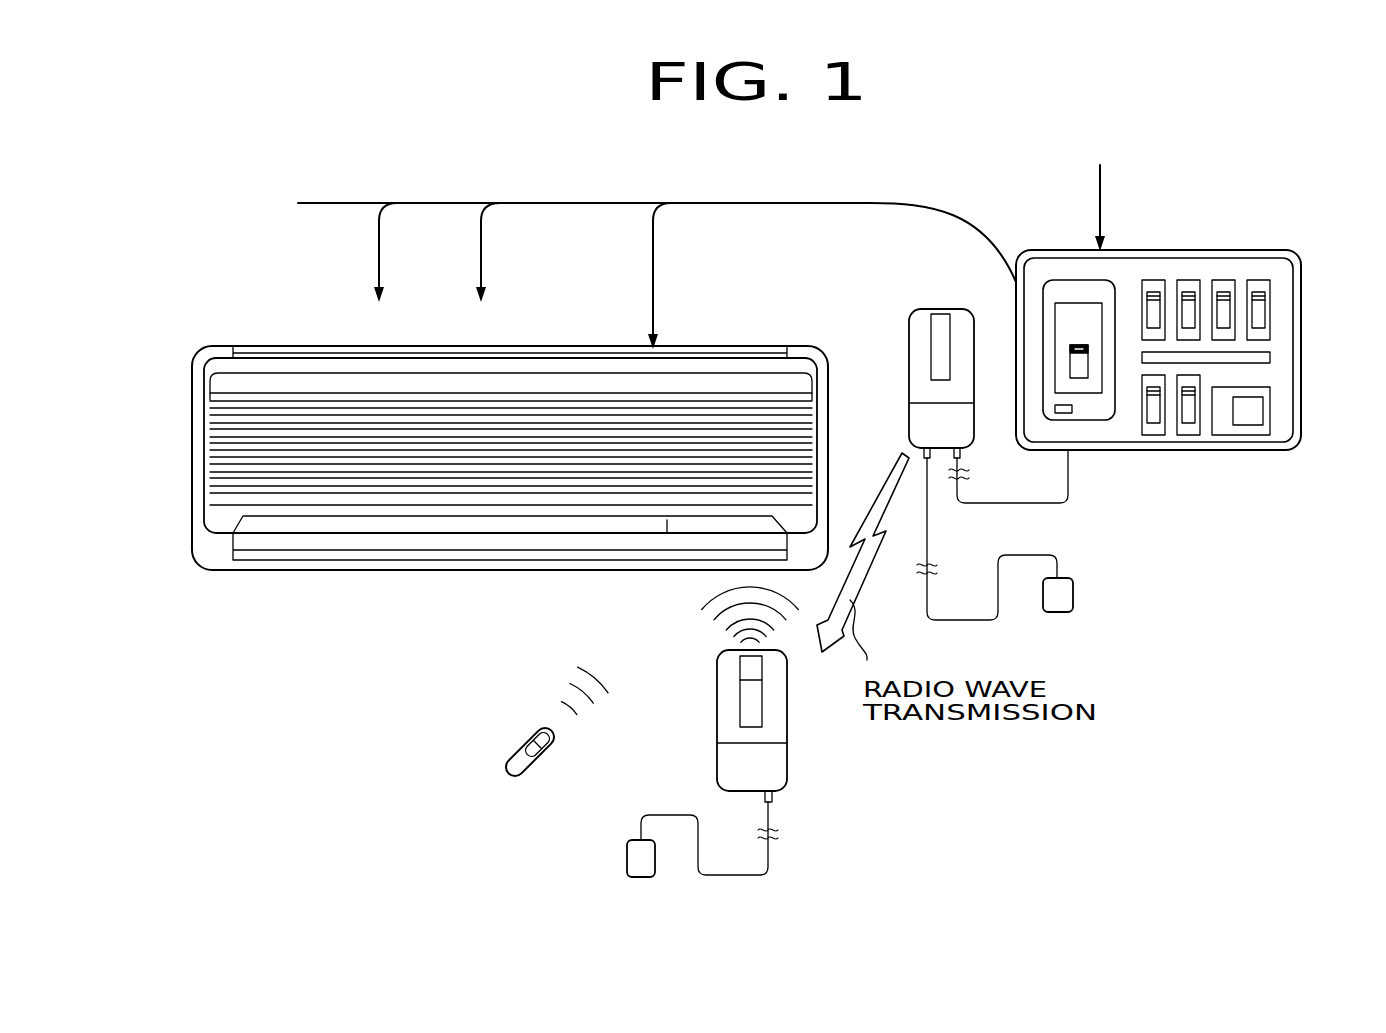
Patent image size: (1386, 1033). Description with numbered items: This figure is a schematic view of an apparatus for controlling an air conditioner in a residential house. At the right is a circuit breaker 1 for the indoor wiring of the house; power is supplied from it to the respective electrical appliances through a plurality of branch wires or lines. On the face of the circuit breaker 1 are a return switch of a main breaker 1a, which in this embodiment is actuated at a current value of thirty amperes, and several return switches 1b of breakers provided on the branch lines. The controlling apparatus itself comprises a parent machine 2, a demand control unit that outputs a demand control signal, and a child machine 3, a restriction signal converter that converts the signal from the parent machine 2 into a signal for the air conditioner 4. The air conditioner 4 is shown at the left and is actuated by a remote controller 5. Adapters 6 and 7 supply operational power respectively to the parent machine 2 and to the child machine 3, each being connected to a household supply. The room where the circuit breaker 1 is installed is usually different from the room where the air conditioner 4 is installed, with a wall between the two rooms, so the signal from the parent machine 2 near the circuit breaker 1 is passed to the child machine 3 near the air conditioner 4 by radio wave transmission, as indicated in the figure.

The circuit breaker 1 is at (1108, 250).
The return switch of a main breaker 1a is at (1078, 356).
The return switch of a breaker provided on a branch line 1b is at (1155, 292).
The parent machine 2 is at (909, 337).
The child machine 3 is at (787, 750).
The air conditioner 4 is at (567, 347).
The remote controller 5 is at (548, 756).
The adapter 6 is at (1073, 595).
The adapter 7 is at (627, 856).